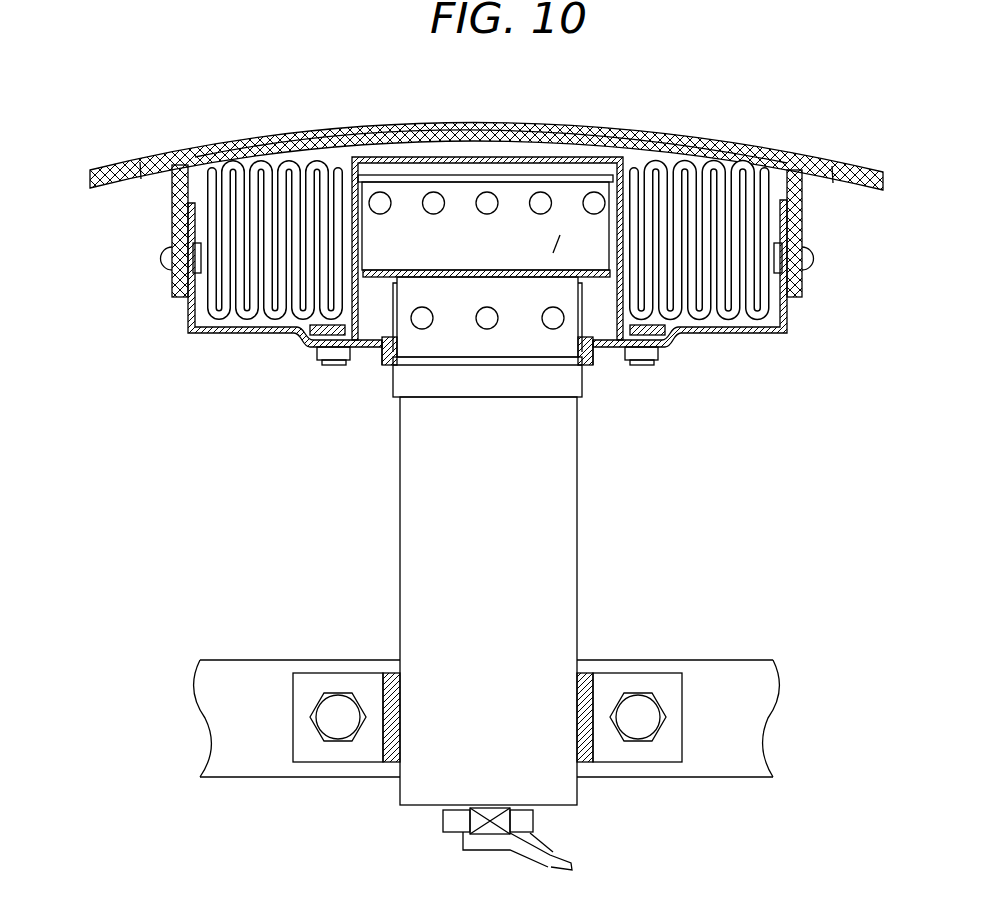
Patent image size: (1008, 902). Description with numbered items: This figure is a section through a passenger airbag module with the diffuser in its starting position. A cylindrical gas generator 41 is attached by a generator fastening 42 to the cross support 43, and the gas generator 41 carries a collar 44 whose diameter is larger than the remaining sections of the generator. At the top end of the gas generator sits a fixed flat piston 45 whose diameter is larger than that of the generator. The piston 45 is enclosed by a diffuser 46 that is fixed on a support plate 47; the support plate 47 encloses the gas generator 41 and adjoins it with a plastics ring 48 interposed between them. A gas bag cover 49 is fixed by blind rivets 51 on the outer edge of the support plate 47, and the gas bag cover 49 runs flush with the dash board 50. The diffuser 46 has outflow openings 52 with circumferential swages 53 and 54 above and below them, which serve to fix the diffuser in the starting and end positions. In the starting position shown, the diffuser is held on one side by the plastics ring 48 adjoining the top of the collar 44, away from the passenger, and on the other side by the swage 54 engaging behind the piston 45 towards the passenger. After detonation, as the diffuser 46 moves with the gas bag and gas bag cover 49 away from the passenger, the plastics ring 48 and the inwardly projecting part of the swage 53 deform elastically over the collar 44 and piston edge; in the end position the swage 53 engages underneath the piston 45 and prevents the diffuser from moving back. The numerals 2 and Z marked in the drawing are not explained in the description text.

The heating element 2 is at (710, 167).
The gas generator 41 is at (540, 536).
The generator fastening 42 is at (312, 685).
The cross support 43 is at (250, 673).
The collar 44 is at (535, 418).
The piston 45 is at (495, 193).
The diffuser 46 is at (450, 270).
The support plate 47 is at (725, 333).
The plastics ring 48 is at (393, 360).
The gas bag cover 49 is at (185, 150).
The dash board 50 is at (128, 162).
The blind rivets 51 is at (797, 262).
The outflow openings 52 is at (488, 157).
The swage 53 is at (372, 175).
The swage 54 is at (555, 318).
The zone Z is at (575, 215).